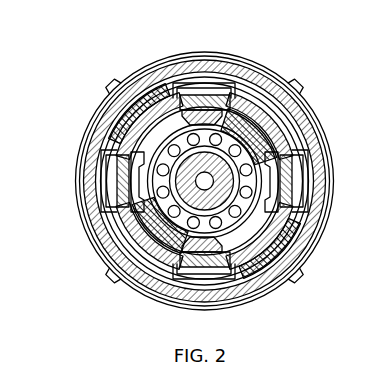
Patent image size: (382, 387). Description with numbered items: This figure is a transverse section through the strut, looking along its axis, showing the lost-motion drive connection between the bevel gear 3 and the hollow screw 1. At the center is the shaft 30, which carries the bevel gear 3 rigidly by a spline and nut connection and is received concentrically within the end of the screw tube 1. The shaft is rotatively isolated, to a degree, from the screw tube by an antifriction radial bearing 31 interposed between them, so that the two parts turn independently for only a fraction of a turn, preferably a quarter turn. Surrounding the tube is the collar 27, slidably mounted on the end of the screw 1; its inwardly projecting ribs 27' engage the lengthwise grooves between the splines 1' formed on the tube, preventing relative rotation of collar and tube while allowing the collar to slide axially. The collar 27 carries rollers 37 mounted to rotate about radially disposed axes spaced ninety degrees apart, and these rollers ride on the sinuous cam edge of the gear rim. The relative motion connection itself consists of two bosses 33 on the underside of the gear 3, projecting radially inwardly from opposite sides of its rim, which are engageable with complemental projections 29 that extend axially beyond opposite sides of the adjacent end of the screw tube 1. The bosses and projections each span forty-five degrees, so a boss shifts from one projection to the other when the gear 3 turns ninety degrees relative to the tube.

The hollow screw 1 is at (245, 181).
The splines 1' is at (233, 147).
The bevel gear 3 is at (283, 126).
The collar 27 is at (205, 181).
The inwardly projecting ribs 27' is at (236, 149).
The projections 29 is at (239, 97).
The shaft 30 is at (128, 132).
The radial bearing 31 is at (143, 98).
The bosses 33 is at (148, 147).
The rollers 37 is at (185, 86).